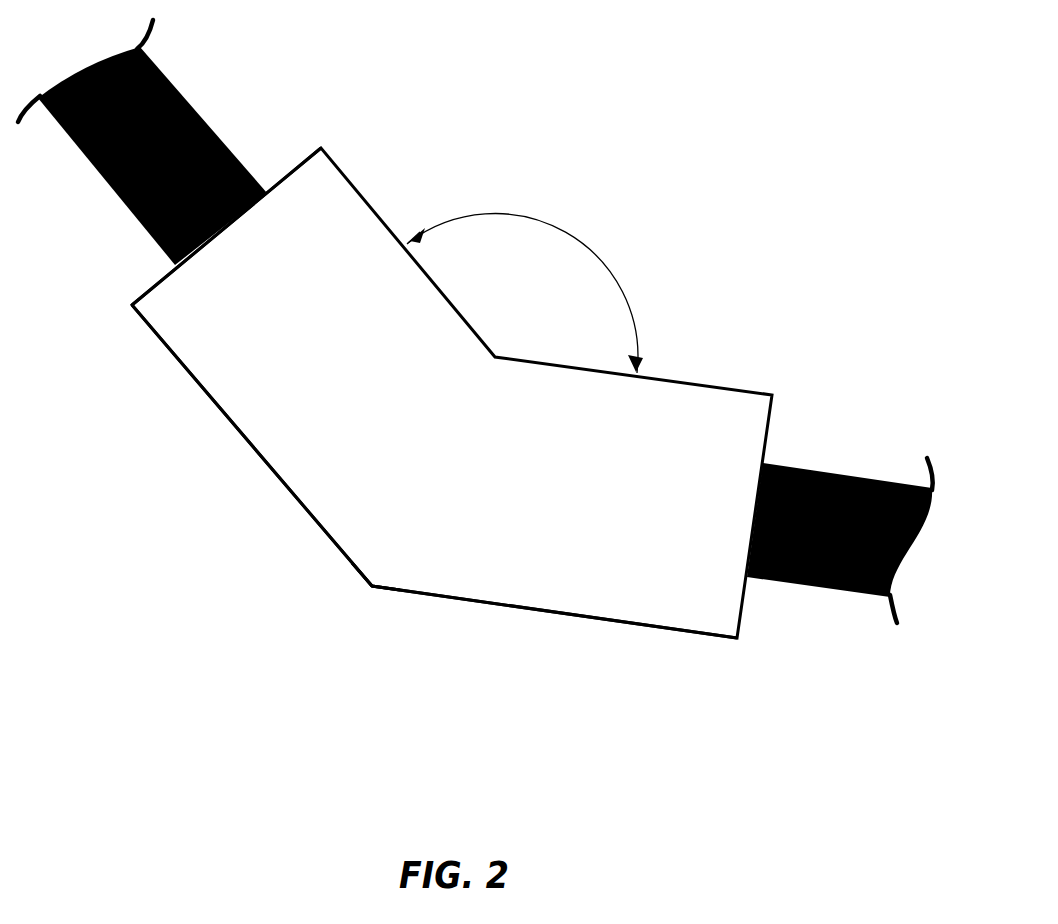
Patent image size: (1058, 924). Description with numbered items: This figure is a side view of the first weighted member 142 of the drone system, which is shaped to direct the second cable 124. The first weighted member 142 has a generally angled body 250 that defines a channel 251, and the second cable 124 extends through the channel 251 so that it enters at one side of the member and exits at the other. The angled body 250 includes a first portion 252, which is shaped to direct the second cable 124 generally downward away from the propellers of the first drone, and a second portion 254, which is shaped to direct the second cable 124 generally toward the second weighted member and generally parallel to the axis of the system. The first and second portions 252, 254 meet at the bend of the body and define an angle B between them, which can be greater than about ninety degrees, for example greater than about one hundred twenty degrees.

The second cable 124 is at (172, 76).
The first weighted member 142 is at (694, 267).
The angle B is at (525, 293).
The angled body 250 is at (373, 588).
The channel 251 is at (156, 269).
The first portion 252 is at (235, 393).
The second portion 254 is at (582, 587).